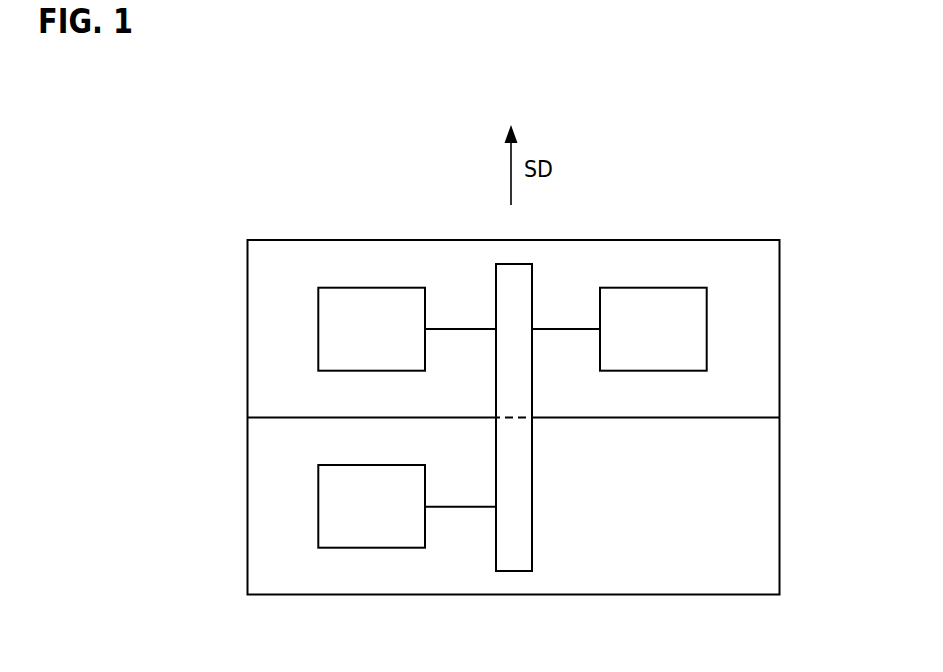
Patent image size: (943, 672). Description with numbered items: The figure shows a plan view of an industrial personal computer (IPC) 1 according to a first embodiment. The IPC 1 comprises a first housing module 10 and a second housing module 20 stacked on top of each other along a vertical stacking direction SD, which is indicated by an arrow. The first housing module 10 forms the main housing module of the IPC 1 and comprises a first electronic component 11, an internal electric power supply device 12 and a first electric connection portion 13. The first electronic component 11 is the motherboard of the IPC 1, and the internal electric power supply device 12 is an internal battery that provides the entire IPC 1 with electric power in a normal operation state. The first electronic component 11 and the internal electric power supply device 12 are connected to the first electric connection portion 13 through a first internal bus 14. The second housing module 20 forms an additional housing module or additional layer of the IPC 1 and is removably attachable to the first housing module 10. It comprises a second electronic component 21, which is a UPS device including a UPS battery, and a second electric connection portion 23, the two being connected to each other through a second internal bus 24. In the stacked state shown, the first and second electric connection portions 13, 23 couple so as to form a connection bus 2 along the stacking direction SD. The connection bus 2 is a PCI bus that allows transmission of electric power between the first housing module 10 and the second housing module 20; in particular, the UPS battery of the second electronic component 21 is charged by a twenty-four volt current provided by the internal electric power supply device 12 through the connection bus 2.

The industrial personal computer 1 is at (268, 134).
The connection bus 2 is at (505, 587).
The first housing module 10 is at (248, 323).
The first electronic component 11 is at (368, 288).
The internal electric power supply device 12 is at (707, 333).
The first electric connection portion 13 is at (532, 277).
The first internal bus 14 is at (448, 329).
The second housing module 20 is at (248, 528).
The second electronic component 21 is at (425, 537).
The second electric connection portion 23 is at (532, 548).
The second internal bus 24 is at (468, 505).